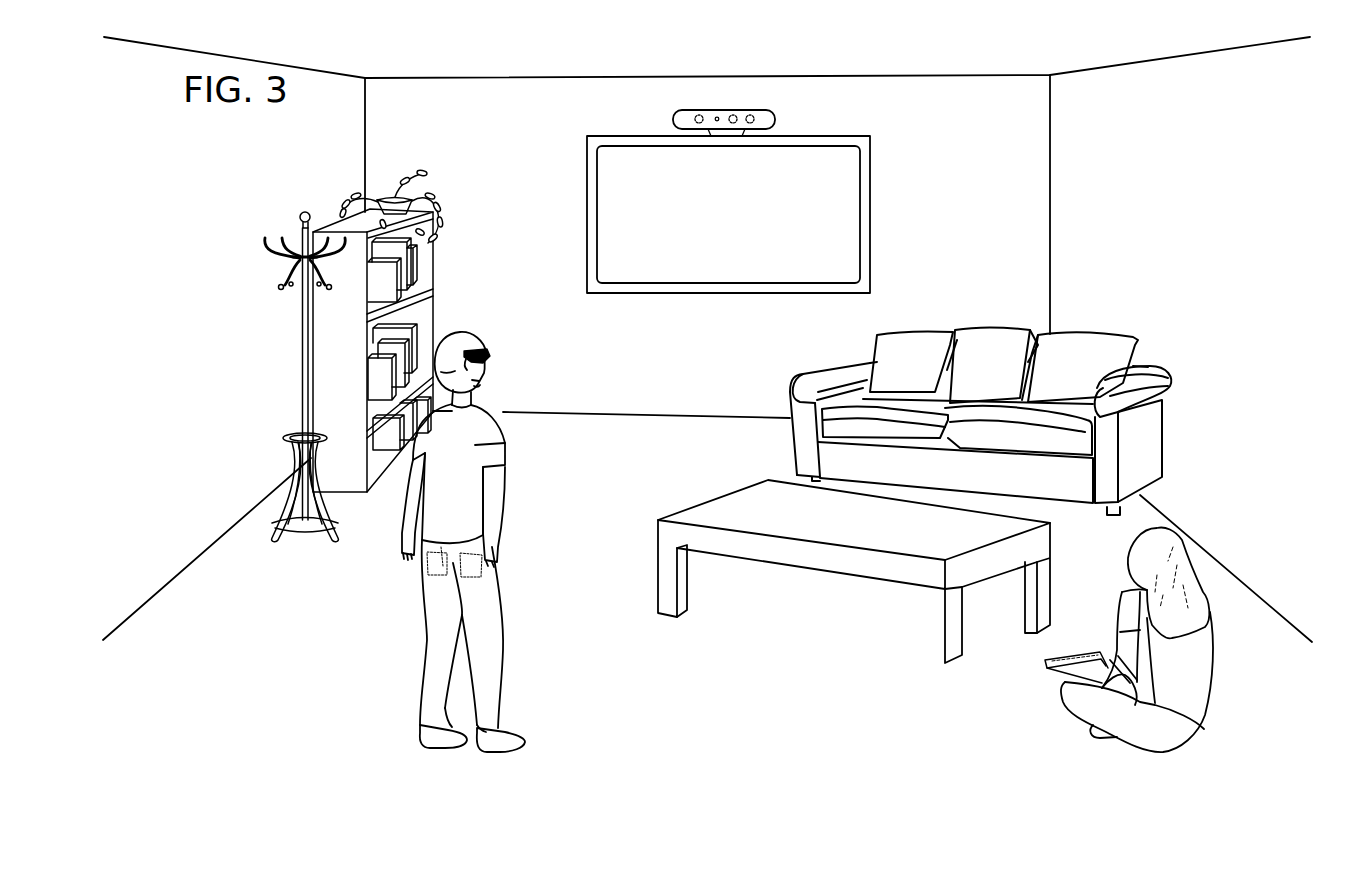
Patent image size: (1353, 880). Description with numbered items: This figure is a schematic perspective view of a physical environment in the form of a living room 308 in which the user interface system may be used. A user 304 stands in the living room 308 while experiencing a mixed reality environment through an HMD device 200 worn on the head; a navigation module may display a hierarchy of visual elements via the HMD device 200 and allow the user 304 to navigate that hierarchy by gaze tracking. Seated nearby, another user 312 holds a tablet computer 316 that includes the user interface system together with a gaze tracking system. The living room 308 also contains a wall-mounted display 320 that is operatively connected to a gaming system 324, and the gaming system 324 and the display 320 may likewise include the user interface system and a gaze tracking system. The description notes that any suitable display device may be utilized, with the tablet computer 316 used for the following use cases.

The living room 308 is at (864, 78).
The wall-mounted display 320 is at (871, 196).
The gaming system 324 is at (763, 111).
The user 304 is at (504, 443).
The HMD device 200 is at (488, 355).
The another user 312 is at (1217, 642).
The tablet computer 316 is at (1046, 658).